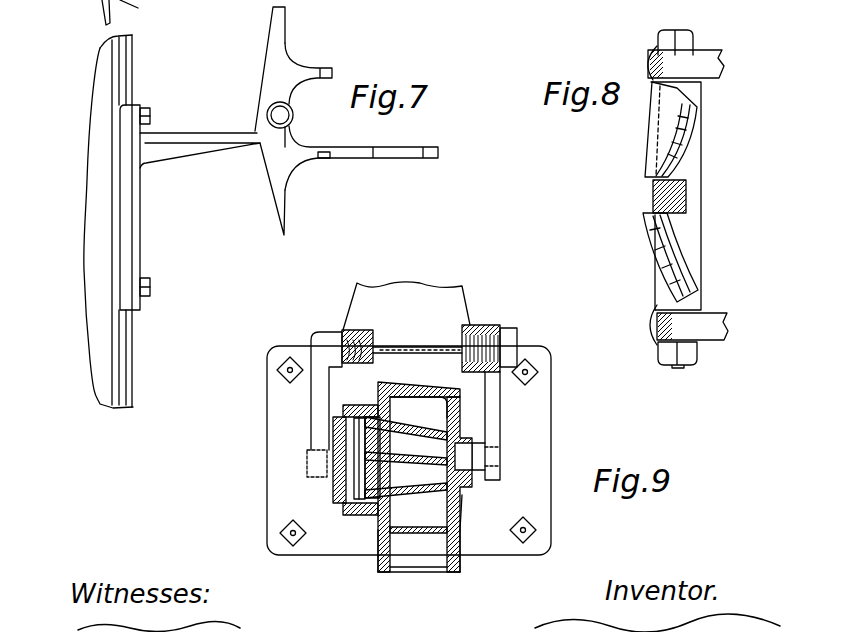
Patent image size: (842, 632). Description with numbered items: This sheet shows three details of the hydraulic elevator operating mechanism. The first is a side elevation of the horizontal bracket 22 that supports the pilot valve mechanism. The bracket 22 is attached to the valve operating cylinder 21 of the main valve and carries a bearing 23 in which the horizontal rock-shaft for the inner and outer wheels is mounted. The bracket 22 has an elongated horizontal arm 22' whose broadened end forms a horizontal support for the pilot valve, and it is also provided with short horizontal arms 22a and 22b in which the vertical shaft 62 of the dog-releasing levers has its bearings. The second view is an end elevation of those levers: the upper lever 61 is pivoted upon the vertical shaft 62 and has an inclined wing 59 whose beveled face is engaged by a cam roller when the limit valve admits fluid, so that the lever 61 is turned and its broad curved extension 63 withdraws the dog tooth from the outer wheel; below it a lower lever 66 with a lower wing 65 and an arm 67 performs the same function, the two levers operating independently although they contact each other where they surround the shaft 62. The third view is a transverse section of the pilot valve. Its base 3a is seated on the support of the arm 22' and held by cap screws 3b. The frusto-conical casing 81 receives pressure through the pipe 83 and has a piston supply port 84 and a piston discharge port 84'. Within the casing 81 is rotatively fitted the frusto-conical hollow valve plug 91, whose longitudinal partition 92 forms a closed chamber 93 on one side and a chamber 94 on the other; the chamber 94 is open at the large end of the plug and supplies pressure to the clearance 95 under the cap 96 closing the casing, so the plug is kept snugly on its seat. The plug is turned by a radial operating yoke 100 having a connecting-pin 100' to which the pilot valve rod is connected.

In FIG. 7, the valve operating cylinder 21 is at (133, 370).
In FIG. 7, the horizontal bracket 22 is at (202, 158).
In FIG. 7, the short horizontal arm 22a is at (330, 72).
In FIG. 8, the short horizontal arm 22a is at (713, 53).
In FIG. 7, the short horizontal arm 22b is at (325, 160).
In FIG. 8, the short horizontal arm 22b is at (708, 343).
In FIG. 7, the elongated horizontal arm 22' is at (361, 166).
In FIG. 7, the bearing 23 is at (294, 115).
In FIG. 8, the inclined wing 59 is at (650, 78).
In FIG. 8, the lever 61 is at (714, 133).
In FIG. 8, the vertical shaft 62 is at (683, 367).
In FIG. 8, the broad arm or extension 63 is at (650, 162).
In FIG. 8, the lower wing 65 is at (648, 327).
In FIG. 8, the lower lever 66 is at (725, 245).
In FIG. 8, the arm 67 is at (652, 250).
In FIG. 9, the base 3a is at (551, 410).
In FIG. 9, the cap screws 3b is at (288, 371).
In FIG. 9, the frusto-conical casing 81 is at (463, 498).
In FIG. 9, the pipe 83 is at (387, 572).
In FIG. 9, the piston supply port 84 is at (394, 496).
In FIG. 9, the piston discharge port 84' is at (465, 410).
In FIG. 9, the frusto-conical hollow valve plug 91 is at (452, 434).
In FIG. 9, the longitudinal partition 92 is at (475, 470).
In FIG. 9, the closed chamber 93 is at (406, 441).
In FIG. 9, the chamber 94 is at (406, 483).
In FIG. 9, the clearance 95 is at (333, 440).
In FIG. 9, the cap 96 is at (333, 493).
In FIG. 9, the radial operating yoke 100 is at (452, 390).
In FIG. 9, the connecting-pin 100' is at (406, 317).